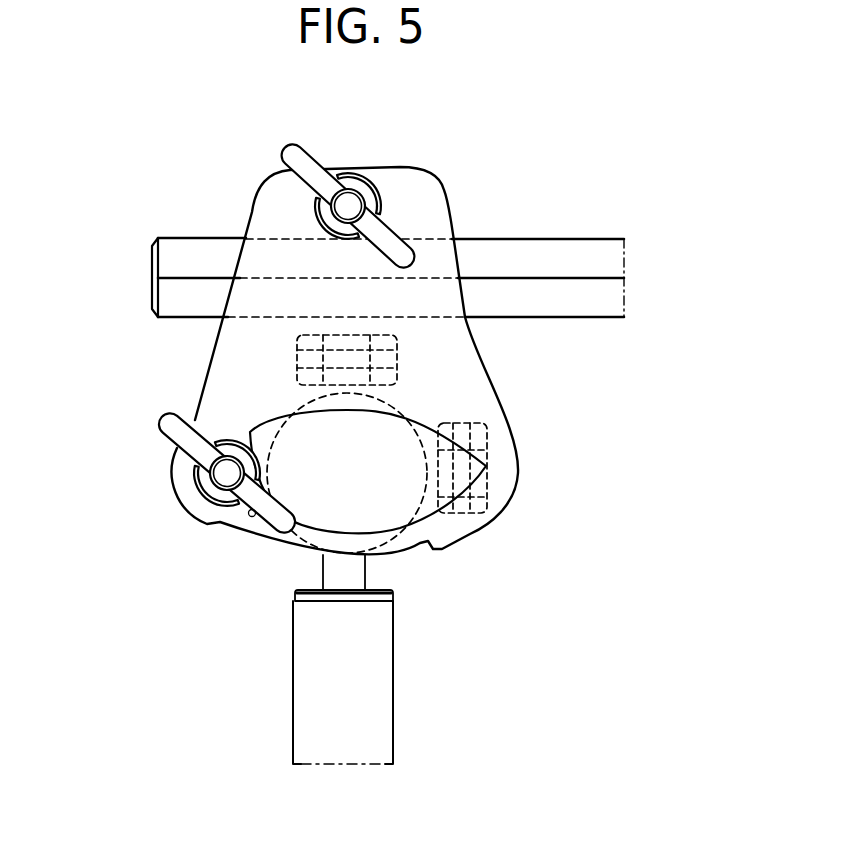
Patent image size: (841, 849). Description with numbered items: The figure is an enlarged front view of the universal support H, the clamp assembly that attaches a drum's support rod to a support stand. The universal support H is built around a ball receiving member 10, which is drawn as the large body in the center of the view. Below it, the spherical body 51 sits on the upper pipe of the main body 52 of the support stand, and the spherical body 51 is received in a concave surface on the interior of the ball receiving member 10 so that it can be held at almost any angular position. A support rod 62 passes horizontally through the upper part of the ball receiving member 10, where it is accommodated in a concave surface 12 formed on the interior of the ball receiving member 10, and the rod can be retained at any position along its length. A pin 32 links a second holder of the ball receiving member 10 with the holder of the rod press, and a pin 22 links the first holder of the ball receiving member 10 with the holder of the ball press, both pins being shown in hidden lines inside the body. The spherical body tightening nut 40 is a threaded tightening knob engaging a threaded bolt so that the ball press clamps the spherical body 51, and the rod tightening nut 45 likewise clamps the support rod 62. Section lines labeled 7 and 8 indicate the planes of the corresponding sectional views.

The ball receiving member 10 is at (215, 380).
The concave surface 12 is at (427, 317).
The pin 22 is at (487, 512).
The pin 32 is at (307, 335).
The spherical body tightening nut 40 is at (260, 502).
The rod tightening nut 45 is at (382, 228).
The spherical body 51 is at (380, 500).
The main body 52 is at (393, 678).
The support rod 62 is at (580, 238).
The universal support H is at (500, 411).
The section line 7- 7 is at (150, 474).
The section line 8- 8 is at (315, 114).